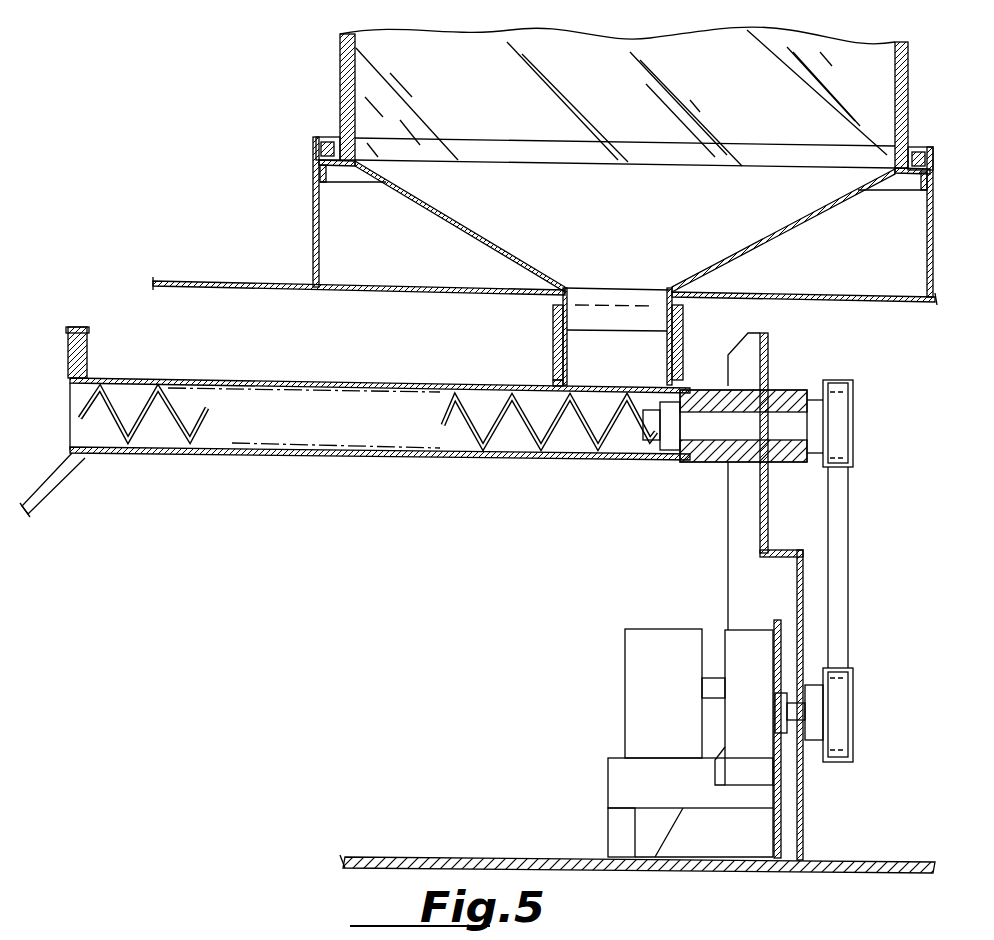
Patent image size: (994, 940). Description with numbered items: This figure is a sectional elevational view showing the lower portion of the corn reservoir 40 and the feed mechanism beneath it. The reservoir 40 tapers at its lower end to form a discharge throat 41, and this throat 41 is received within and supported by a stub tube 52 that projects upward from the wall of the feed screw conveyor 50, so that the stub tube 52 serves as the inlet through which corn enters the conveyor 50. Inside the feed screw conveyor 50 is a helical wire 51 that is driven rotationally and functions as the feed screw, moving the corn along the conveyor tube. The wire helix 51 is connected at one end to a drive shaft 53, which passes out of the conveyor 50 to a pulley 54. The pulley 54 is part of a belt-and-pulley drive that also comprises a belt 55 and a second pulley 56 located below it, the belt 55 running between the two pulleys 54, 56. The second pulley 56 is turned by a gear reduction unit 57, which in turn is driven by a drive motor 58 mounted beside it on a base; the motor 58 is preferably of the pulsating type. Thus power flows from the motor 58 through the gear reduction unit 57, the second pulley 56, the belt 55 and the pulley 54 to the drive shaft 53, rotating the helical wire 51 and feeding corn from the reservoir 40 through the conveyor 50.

The corn reservoir 40 is at (330, 78).
The discharge throat 41 is at (628, 288).
The feed screw conveyor 50 is at (394, 470).
The helical wire 51 is at (207, 412).
The stub tube 52 is at (553, 346).
The drive shaft 53 is at (706, 428).
The pulley 54 is at (856, 412).
The belt 55 is at (838, 527).
The second pulley 56 is at (854, 713).
The gear reduction unit 57 is at (742, 648).
The drive motor 58 is at (643, 690).